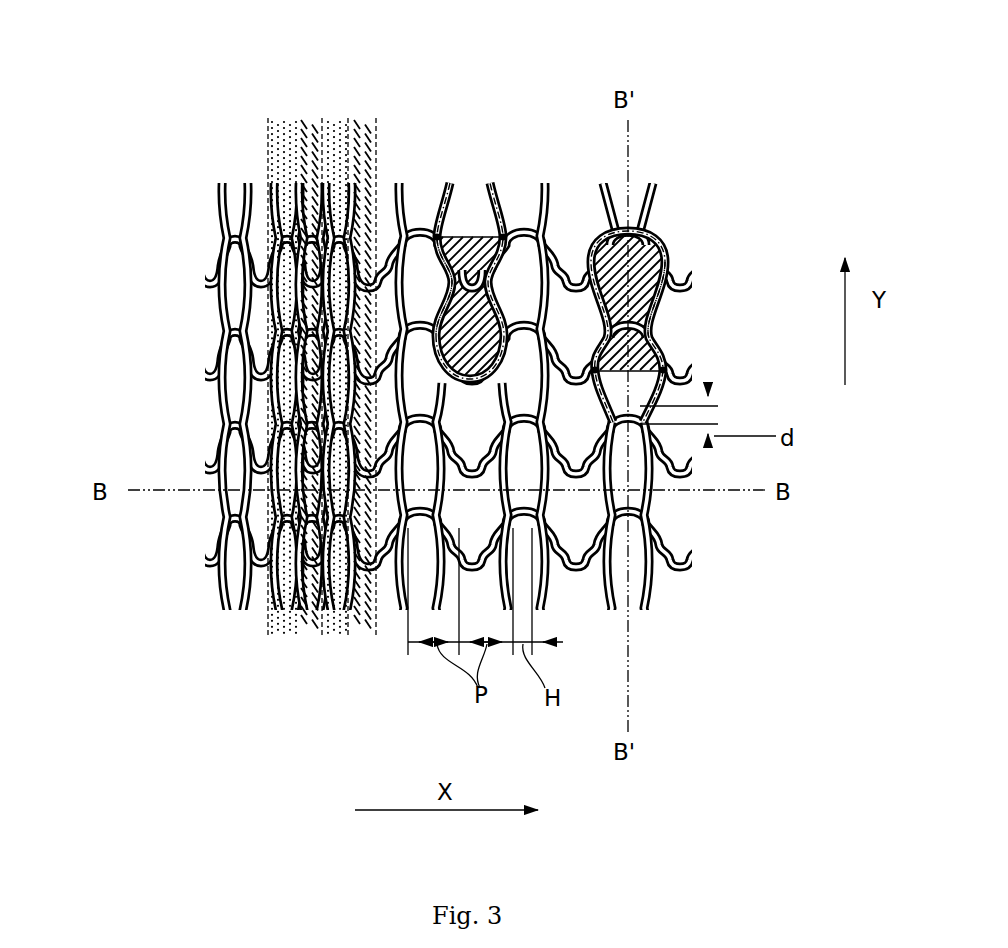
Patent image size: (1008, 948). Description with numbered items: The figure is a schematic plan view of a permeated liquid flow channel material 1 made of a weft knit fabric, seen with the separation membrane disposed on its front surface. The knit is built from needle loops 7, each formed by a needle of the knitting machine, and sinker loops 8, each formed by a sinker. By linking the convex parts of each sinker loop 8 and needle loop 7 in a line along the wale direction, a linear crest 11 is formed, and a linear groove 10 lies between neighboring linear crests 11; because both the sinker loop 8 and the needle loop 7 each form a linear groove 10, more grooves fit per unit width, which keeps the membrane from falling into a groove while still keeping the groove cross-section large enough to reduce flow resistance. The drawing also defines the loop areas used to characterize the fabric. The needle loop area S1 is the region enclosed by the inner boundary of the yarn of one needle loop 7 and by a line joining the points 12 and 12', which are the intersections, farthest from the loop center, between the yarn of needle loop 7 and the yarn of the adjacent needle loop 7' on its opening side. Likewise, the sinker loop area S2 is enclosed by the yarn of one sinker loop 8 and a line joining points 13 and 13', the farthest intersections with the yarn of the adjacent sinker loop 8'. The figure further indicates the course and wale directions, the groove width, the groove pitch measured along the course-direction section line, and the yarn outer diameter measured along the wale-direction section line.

The flow channel material 1 is at (203, 158).
The needle loop 7 is at (679, 270).
The needle loop 7' is at (707, 297).
The sinker loop 8 is at (461, 200).
The sinker loop 8' is at (412, 181).
The linear groove 10 is at (318, 638).
The linear crest 11 is at (372, 690).
The intersection point 12 is at (692, 341).
The intersection point 12' is at (688, 370).
The intersection point 13 is at (412, 144).
The intersection point 13' is at (510, 138).
The needle loop area S1 is at (624, 228).
The sinker loop area S2 is at (475, 245).